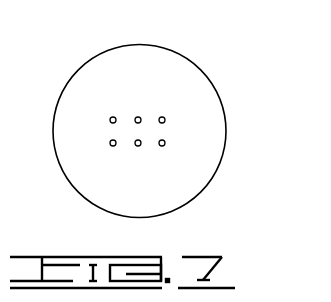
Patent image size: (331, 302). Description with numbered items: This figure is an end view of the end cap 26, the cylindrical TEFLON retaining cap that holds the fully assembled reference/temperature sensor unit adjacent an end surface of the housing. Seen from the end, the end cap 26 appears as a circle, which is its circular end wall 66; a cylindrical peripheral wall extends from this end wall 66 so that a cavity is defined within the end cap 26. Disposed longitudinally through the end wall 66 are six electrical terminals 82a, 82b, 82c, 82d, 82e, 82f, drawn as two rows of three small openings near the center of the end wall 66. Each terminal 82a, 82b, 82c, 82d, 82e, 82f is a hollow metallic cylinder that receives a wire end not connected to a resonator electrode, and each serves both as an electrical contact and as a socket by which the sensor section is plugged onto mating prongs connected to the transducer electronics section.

The end cap 26 is at (200, 60).
The circular end wall 66 is at (195, 97).
The electrical terminal 82a is at (110, 117).
The electrical terminal 82b is at (137, 117).
The electrical terminal 82c is at (164, 117).
The electrical terminal 82d is at (111, 146).
The electrical terminal 82e is at (136, 147).
The electrical terminal 82f is at (163, 147).